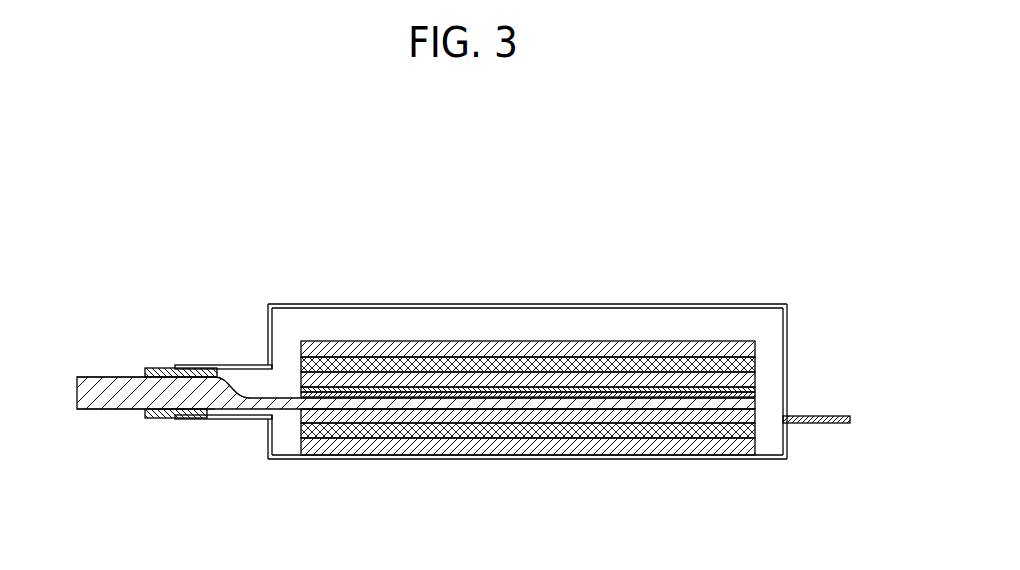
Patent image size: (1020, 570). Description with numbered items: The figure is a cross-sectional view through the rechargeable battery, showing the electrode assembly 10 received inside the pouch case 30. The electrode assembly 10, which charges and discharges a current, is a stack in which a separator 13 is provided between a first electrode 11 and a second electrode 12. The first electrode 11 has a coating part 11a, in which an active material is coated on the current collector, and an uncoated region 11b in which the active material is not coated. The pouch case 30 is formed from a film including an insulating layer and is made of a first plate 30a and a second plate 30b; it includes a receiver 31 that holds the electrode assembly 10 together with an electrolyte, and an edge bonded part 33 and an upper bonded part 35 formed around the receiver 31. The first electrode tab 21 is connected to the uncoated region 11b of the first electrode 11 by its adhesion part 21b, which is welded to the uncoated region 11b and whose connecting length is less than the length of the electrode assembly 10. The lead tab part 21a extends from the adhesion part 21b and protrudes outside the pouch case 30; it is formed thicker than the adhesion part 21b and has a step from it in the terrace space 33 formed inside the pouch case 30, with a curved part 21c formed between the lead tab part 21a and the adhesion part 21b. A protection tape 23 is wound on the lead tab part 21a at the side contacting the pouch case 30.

The electrode assembly 10 is at (584, 398).
The first electrode 11 is at (584, 377).
The coating part 11a is at (755, 391).
The uncoated region 11b is at (755, 405).
The second electrode 12 is at (634, 363).
The separator 13 is at (702, 360).
The first electrode tab 21 is at (410, 391).
The lead tab part 21a is at (130, 410).
The adhesion part 21b is at (529, 457).
The curved part 21c is at (232, 377).
The protection tape 23 is at (152, 365).
The pouch case 30 is at (527, 355).
The first plate 30a is at (348, 304).
The second plate 30b is at (404, 460).
The receiver 31 is at (745, 305).
The terrace space 33 is at (293, 433).
The upper bonded part 35 is at (232, 420).